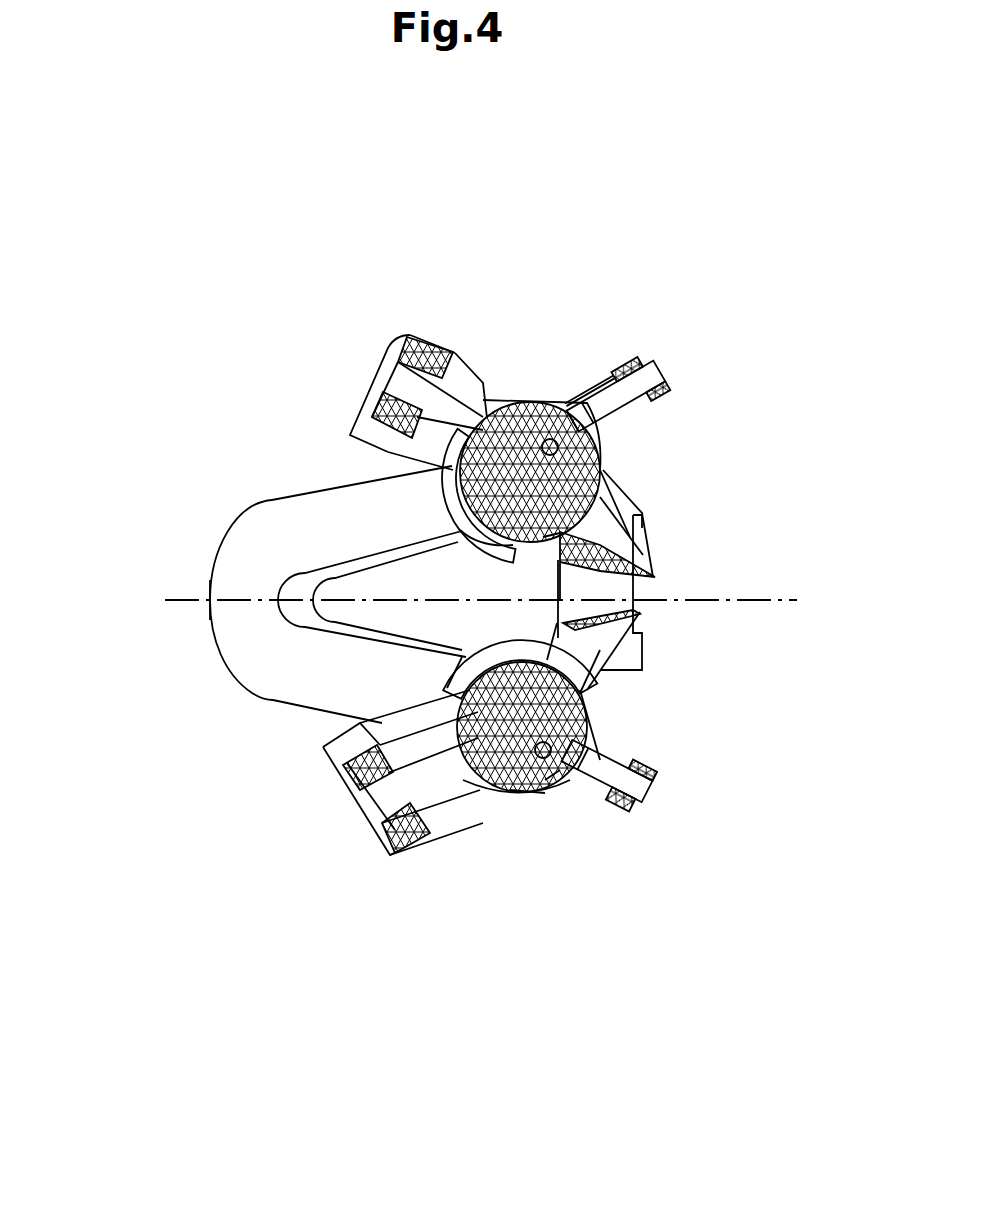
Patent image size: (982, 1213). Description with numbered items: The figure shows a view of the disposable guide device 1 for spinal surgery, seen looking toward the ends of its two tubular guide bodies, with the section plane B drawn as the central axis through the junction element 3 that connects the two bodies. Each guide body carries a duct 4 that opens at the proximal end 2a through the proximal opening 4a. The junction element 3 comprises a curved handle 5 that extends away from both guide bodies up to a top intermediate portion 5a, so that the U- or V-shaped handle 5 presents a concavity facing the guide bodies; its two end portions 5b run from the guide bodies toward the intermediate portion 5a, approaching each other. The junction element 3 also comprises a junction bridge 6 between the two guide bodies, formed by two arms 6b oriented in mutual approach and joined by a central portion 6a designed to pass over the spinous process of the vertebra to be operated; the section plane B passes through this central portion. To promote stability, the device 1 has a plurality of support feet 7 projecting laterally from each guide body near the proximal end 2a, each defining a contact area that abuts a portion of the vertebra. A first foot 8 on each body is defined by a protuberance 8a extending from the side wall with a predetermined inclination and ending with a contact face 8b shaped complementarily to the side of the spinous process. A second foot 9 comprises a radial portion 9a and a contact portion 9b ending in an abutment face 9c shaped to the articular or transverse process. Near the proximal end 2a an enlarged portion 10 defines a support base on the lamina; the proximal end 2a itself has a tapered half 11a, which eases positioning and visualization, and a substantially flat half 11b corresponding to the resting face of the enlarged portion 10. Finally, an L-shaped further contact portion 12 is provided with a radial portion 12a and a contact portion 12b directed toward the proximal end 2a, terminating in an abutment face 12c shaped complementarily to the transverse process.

The guide device 1 is at (160, 268).
The proximal end 2a is at (528, 785).
The junction element 3 is at (183, 636).
The duct 4 is at (581, 722).
The proximal opening 4a is at (558, 763).
The curved handle 5 is at (232, 672).
The top intermediate portion 5a is at (237, 567).
The end portions 5b is at (333, 520).
The junction bridge 6 is at (640, 585).
The central portion 6a is at (560, 578).
The arms 6b is at (613, 520).
The support feet 7 is at (582, 347).
The first foot 8 is at (627, 547).
The protuberances 8a is at (633, 568).
The contact face 8b is at (653, 577).
The second foot 9 is at (382, 350).
The radial portion 9a is at (467, 385).
The contact portion 9b is at (382, 385).
The abutment face 9c is at (380, 408).
The enlarged portion 10 is at (514, 810).
The tapered half 11a is at (550, 410).
The substantially flat half 11b is at (517, 400).
The further contact portion 12 is at (660, 370).
The radial portion 12a is at (573, 421).
The contact portion 12b is at (626, 369).
The abutment face 12c is at (617, 397).
The section plane B is at (768, 598).